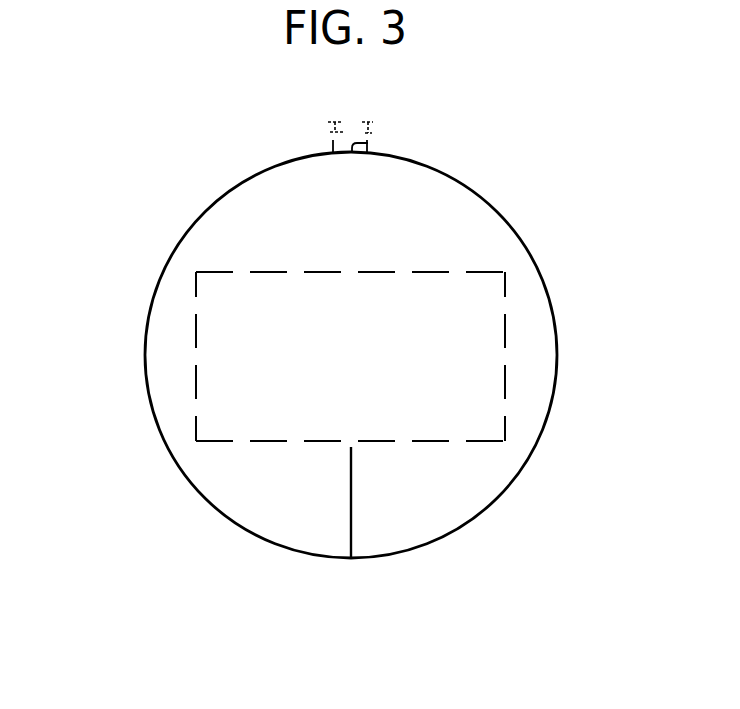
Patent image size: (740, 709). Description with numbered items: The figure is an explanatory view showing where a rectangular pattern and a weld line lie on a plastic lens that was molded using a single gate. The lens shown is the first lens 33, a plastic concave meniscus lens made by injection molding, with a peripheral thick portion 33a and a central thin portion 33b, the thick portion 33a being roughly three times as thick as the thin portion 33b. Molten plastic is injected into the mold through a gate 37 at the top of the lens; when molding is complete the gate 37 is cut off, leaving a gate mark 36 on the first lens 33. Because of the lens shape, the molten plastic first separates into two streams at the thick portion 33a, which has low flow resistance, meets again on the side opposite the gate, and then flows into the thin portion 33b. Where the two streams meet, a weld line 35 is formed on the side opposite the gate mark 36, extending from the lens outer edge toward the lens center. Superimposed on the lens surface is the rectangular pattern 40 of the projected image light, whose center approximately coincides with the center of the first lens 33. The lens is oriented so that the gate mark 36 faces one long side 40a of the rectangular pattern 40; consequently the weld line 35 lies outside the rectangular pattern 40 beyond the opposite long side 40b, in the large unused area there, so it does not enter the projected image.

The first lens 33 is at (150, 440).
The thick portion 33a is at (310, 523).
The thin portion 33b is at (292, 386).
The weld line 35 is at (351, 505).
The gate mark 36 is at (368, 143).
The gate 37 is at (322, 133).
The rectangular pattern 40 is at (450, 272).
The long side 40a is at (327, 272).
The long side 40b is at (392, 441).